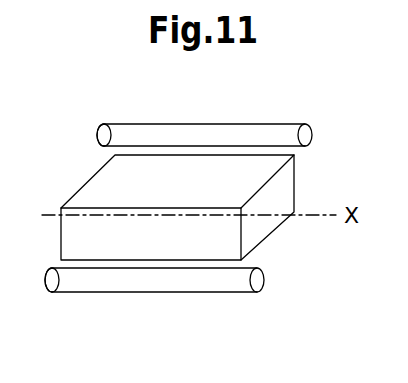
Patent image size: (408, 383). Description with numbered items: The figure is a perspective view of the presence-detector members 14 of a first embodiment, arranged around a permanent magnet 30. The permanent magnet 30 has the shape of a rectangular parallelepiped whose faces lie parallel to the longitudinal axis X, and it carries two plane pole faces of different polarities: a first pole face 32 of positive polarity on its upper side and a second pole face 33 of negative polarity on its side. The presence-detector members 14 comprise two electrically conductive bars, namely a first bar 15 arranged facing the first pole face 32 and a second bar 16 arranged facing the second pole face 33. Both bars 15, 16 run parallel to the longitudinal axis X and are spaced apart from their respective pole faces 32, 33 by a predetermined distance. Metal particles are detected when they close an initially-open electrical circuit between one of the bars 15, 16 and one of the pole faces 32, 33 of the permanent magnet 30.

The presence-detector members 14 is at (209, 88).
The first bar 15 is at (130, 135).
The second bar 16 is at (166, 283).
The permanent magnet 30 is at (214, 209).
The first pole face 32 is at (100, 187).
The second pole face 33 is at (275, 241).